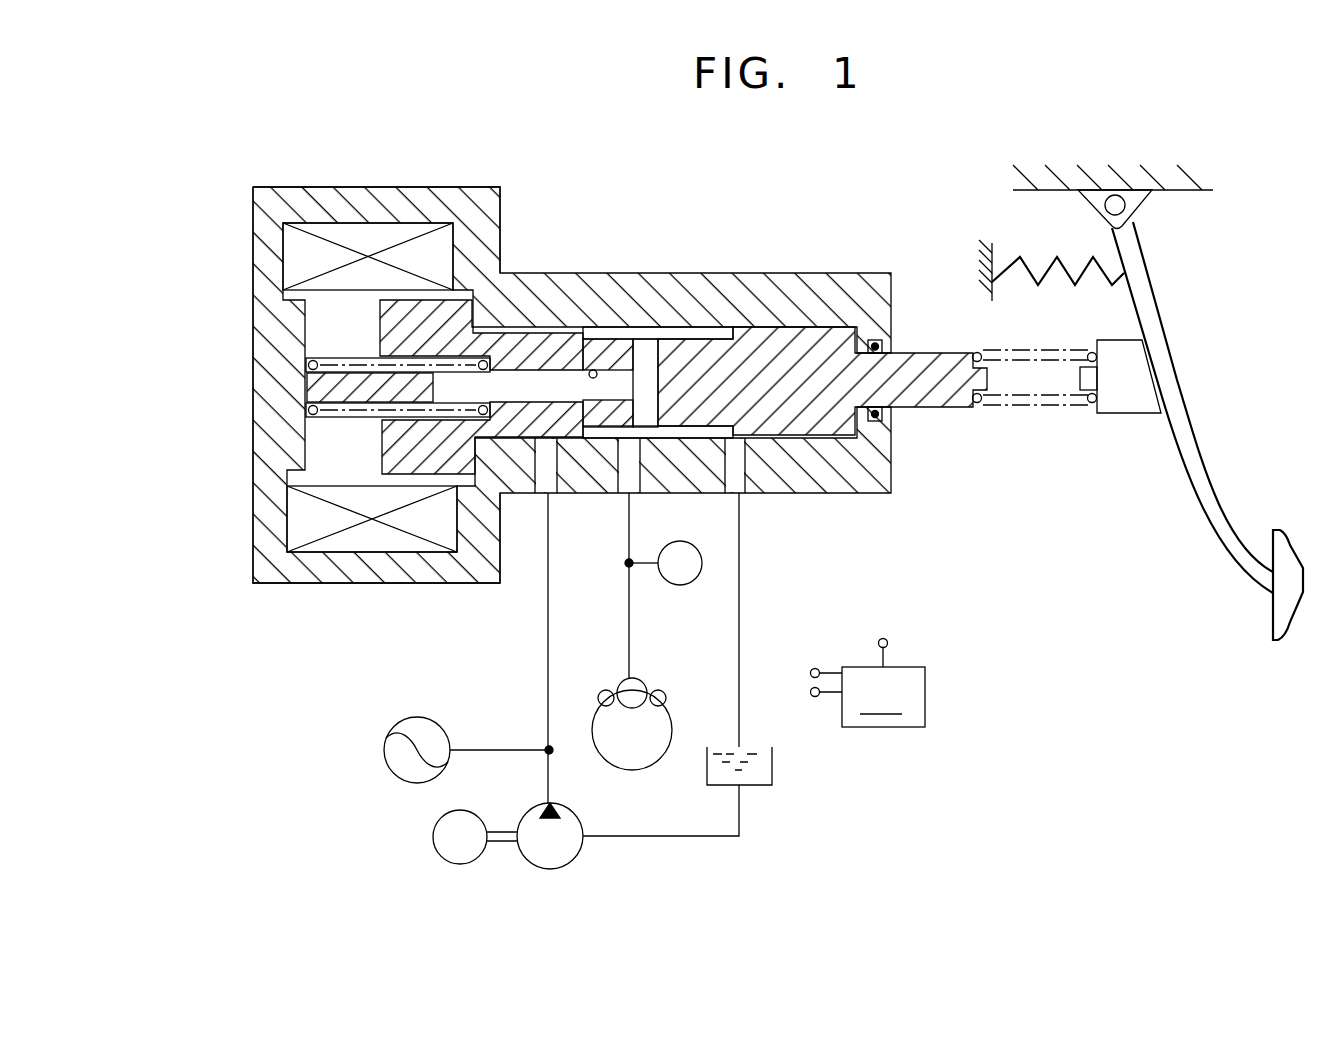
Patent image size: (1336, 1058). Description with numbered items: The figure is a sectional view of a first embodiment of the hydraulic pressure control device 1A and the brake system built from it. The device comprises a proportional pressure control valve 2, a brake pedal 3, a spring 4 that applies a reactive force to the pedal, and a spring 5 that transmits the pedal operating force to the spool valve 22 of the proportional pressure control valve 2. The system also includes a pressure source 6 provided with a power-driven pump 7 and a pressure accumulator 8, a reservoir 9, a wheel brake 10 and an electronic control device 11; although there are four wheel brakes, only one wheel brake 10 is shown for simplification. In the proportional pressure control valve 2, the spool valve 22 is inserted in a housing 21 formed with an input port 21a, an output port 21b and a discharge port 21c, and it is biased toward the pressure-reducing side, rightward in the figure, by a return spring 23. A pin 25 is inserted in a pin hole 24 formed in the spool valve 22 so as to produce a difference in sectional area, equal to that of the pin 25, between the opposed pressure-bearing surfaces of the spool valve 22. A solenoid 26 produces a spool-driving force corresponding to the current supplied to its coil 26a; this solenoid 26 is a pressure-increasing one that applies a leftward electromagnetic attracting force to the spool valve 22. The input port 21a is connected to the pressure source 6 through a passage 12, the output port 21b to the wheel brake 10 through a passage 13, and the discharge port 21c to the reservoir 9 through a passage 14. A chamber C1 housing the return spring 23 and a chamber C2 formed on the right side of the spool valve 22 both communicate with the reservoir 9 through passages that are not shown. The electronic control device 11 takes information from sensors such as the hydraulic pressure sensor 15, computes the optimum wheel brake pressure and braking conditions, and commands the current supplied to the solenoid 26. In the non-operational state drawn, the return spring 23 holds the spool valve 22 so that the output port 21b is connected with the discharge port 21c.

The hydraulic pressure control device 1A is at (730, 241).
The proportional pressure control valve 2 is at (648, 270).
The brake pedal 3 is at (1193, 427).
The spring 4 is at (1021, 256).
The spring 5 is at (1048, 403).
The pressure source 6 is at (465, 882).
The power-driven pump 7 is at (553, 869).
The pressure accumulator 8 is at (390, 776).
The reservoir 9 is at (777, 773).
The wheel brake 10 is at (670, 713).
The electronic control device 11 is at (868, 683).
The passage 12 is at (546, 687).
The passage 13 is at (629, 640).
The passage 14 is at (740, 638).
The hydraulic pressure sensor 15 is at (703, 570).
The housing 21 is at (862, 482).
The input port 21a is at (545, 483).
The output port 21b is at (630, 477).
The discharge port 21c is at (738, 480).
The spool valve 22 is at (825, 337).
The return spring 23 is at (303, 360).
The pin hole 24 is at (593, 371).
The pin 25 is at (523, 383).
The solenoid 26 is at (423, 556).
The coil 26a is at (337, 543).
The chamber C1 is at (325, 437).
The chamber C2 is at (878, 430).